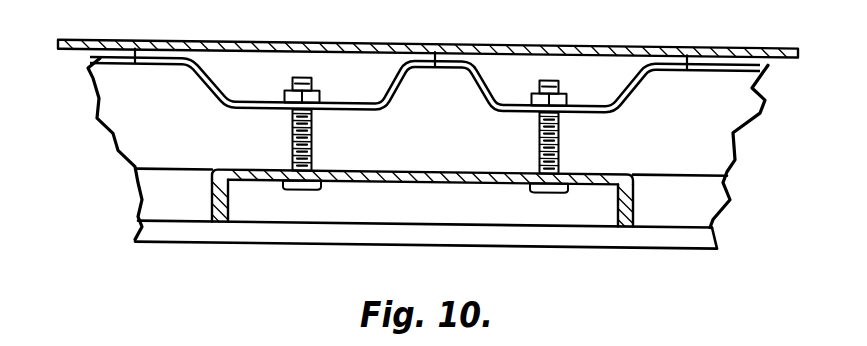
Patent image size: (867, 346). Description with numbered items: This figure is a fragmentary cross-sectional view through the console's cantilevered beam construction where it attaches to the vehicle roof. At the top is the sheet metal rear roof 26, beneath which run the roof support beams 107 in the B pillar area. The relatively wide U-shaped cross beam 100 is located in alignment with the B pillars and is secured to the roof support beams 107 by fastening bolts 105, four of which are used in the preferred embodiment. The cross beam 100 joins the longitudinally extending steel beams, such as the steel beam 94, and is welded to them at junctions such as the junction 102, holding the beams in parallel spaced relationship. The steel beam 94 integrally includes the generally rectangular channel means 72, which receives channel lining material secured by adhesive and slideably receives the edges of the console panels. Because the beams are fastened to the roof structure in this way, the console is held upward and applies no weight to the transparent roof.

The sheet metal rear roof 26 is at (585, 38).
The roof support beams 107 is at (202, 81).
The bolts 105 is at (313, 144).
The U-shaped cross beam 100 is at (452, 116).
The junction 102 is at (228, 201).
The channel means 72 is at (718, 189).
The steel beam 94 is at (142, 200).